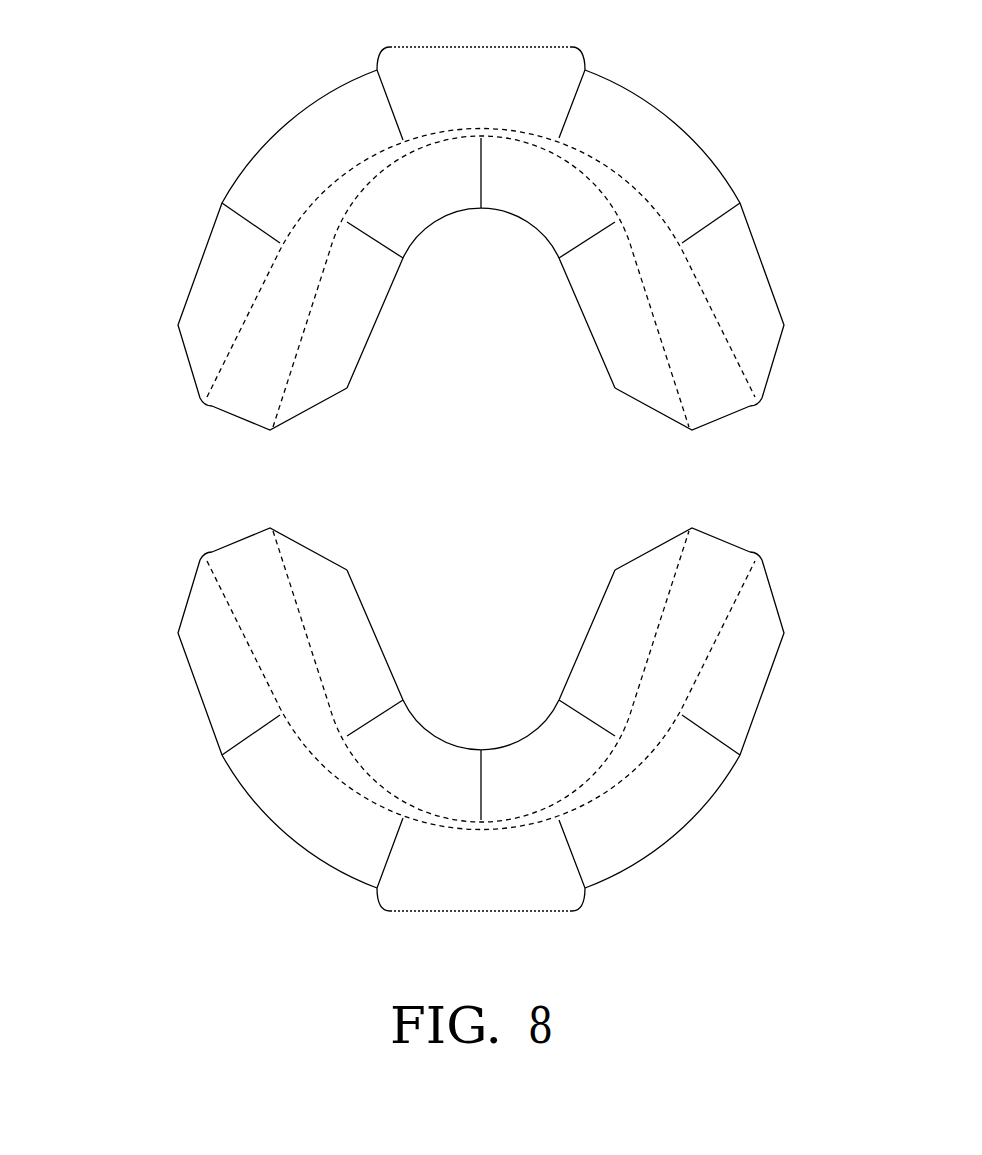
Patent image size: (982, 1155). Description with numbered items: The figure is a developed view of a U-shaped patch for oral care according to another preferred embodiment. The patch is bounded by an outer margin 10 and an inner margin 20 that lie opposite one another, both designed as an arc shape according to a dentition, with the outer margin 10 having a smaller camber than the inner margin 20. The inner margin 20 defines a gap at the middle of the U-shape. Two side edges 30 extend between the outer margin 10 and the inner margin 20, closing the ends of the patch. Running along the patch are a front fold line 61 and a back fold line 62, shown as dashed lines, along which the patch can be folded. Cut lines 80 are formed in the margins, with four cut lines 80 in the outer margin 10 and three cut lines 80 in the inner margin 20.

The outer margin 10 is at (670, 118).
The inner margin 20 is at (383, 303).
The side edges 30 is at (223, 417).
The front fold line 61 is at (237, 337).
The back fold line 62 is at (290, 365).
The cut lines 80 is at (243, 213).